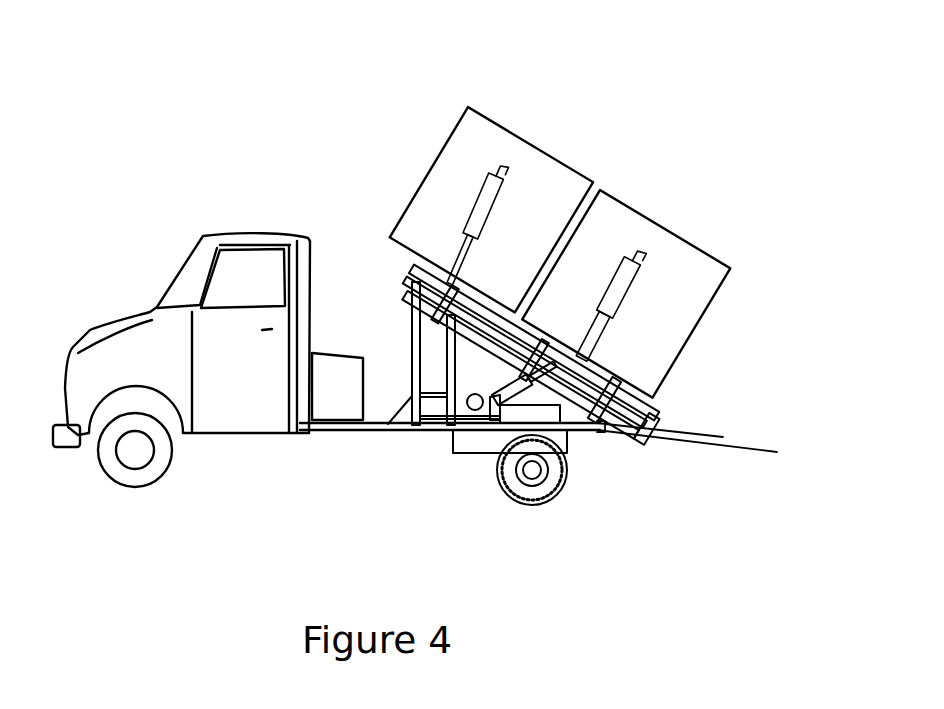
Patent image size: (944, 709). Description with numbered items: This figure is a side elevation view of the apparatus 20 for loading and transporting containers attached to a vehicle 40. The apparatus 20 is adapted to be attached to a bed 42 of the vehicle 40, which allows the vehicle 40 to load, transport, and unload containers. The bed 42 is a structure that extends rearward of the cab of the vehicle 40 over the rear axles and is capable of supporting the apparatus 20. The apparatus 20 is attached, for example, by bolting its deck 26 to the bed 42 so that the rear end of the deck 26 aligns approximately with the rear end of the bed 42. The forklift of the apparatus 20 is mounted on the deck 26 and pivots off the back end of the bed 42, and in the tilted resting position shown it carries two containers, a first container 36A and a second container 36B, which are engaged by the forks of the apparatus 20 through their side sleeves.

The vehicle 40 is at (345, 91).
The apparatus 20 is at (609, 273).
The first container 36A is at (543, 148).
The second container 36B is at (670, 228).
The deck 26 is at (723, 436).
The bed 42 is at (777, 452).